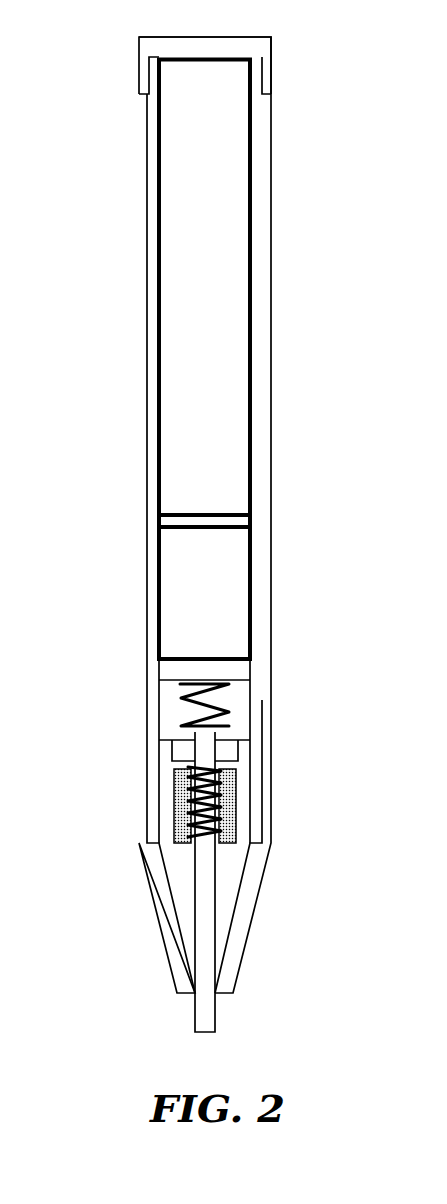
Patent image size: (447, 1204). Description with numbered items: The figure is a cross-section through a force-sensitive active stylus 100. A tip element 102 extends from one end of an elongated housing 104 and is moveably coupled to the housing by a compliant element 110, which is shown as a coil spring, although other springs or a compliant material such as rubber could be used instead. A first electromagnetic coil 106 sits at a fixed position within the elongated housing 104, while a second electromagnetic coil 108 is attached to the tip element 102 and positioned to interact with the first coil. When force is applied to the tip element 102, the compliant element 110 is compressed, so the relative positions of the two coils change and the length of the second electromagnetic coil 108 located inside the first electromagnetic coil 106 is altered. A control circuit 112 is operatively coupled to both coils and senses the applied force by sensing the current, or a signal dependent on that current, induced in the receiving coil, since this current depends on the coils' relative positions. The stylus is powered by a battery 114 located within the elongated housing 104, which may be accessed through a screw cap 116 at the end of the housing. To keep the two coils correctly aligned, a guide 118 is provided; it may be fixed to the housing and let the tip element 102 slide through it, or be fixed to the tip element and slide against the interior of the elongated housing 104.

The force-sensitive stylus 100 is at (366, 256).
The tip element 102 is at (195, 1012).
The elongated housing 104 is at (139, 386).
The first electromagnetic coil 106 is at (177, 845).
The second electromagnetic coil 108 is at (218, 770).
The compliant element 110 is at (228, 700).
The control circuit 112 is at (185, 602).
The battery 114 is at (190, 250).
The screw cap 116 is at (139, 53).
The guide 118 is at (167, 750).